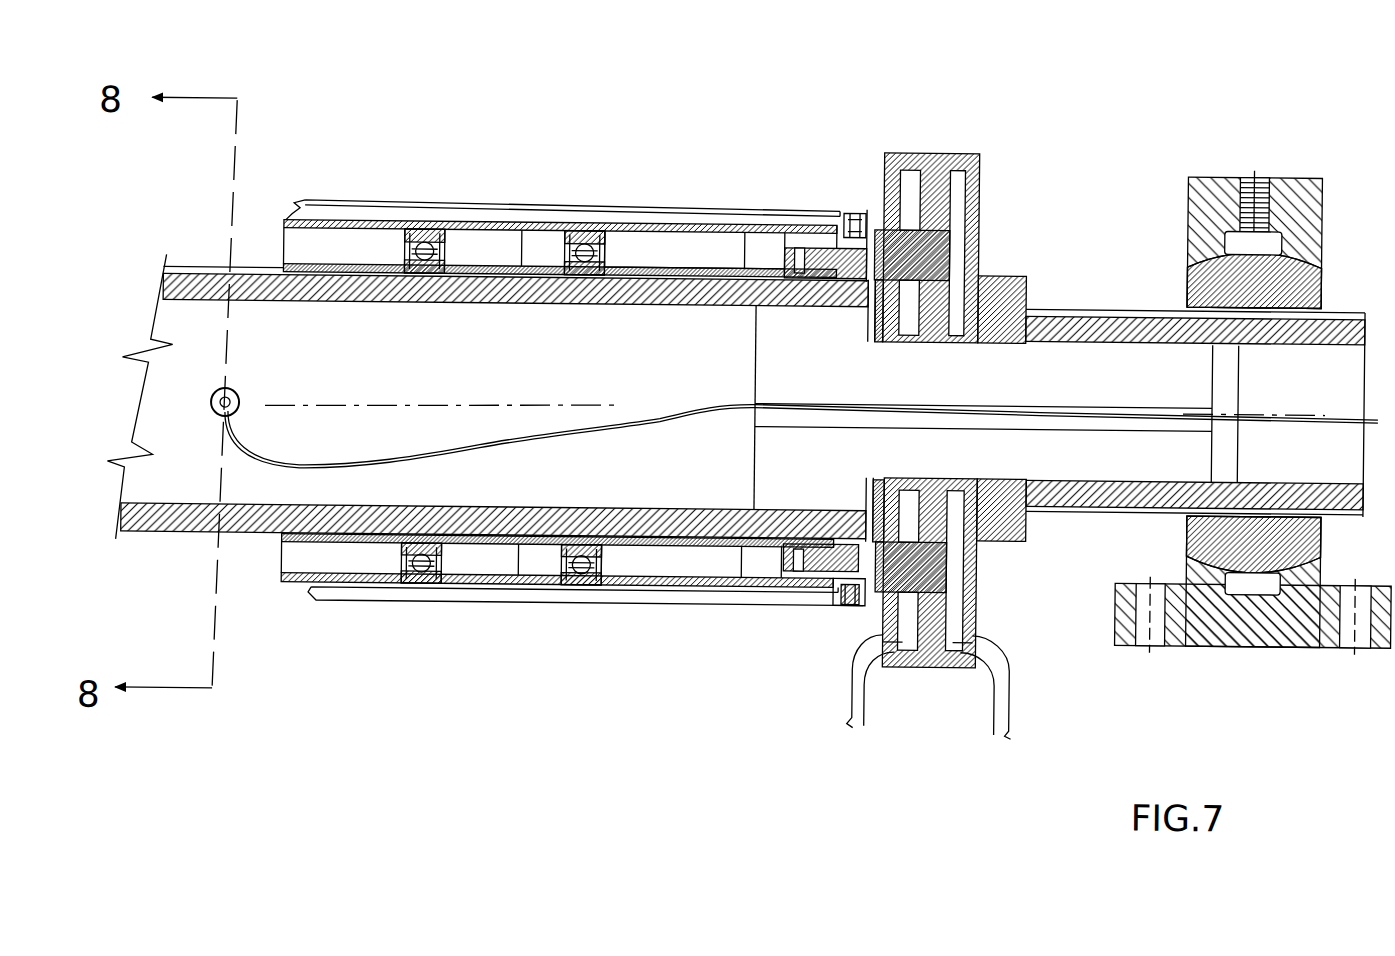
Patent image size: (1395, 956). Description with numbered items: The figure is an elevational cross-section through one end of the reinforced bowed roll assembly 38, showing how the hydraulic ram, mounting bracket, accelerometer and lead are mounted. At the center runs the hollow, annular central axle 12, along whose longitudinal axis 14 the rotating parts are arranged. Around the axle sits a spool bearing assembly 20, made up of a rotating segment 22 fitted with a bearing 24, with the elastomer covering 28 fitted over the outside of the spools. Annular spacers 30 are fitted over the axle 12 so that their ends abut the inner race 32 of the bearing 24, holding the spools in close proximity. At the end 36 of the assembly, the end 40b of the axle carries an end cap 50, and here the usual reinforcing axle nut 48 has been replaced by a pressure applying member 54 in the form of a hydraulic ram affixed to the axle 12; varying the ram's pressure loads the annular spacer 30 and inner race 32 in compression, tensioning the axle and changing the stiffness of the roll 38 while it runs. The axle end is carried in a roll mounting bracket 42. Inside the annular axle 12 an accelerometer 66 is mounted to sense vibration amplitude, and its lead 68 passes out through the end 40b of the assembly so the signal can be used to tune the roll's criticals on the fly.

The central axle 12 is at (200, 277).
The longitudinal axis 14 is at (393, 410).
The spool bearing assembly 20 is at (430, 588).
The rotating segment 22 is at (378, 226).
The bearing 24 is at (613, 228).
The elastomer covering 28 is at (684, 593).
The annular spacer 30 is at (518, 268).
The inner race 32 is at (440, 262).
The end of the assembly 36 is at (838, 214).
The reinforced bowed roll assembly 38 is at (1065, 378).
The end of the axle 40b is at (838, 572).
The roll mounting bracket 42 is at (1202, 195).
The reinforcing axle nut 48 is at (1059, 316).
The end cap 50 is at (855, 208).
The pressure applying member 54 is at (975, 197).
The accelerometer 66 is at (205, 424).
The lead 68 is at (452, 466).